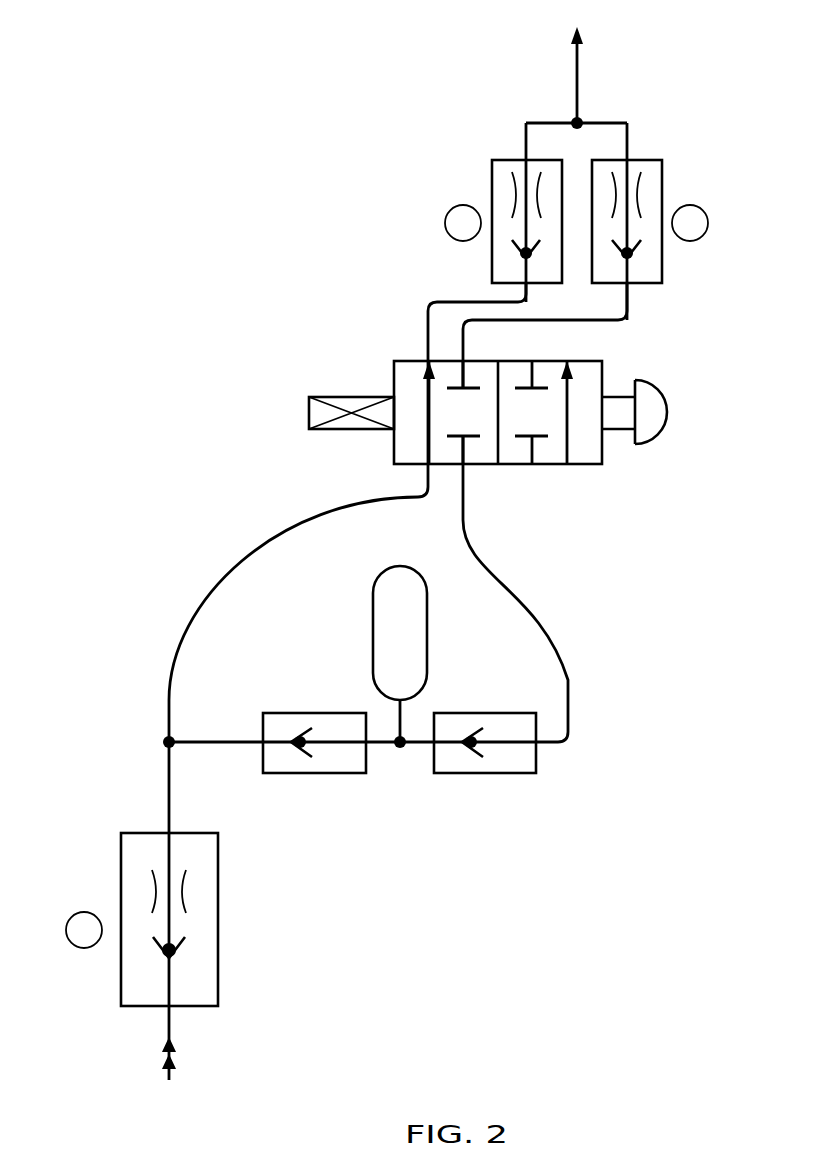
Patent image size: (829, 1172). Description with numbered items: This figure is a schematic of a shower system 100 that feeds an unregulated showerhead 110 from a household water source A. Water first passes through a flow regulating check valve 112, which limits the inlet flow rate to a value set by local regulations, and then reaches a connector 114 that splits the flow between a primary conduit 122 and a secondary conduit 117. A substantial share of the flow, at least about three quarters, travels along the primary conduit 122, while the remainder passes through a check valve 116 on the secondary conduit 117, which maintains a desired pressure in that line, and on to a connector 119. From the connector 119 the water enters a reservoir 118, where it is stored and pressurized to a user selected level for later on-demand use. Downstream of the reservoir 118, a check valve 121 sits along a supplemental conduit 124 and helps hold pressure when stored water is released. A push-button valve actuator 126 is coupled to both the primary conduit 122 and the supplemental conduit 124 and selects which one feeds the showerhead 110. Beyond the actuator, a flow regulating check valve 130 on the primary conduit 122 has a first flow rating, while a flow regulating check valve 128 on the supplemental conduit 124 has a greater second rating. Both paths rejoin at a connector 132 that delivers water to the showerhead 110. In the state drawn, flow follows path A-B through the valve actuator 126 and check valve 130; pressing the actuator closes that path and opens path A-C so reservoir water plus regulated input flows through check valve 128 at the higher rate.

The shower system 100 is at (296, 99).
The showerhead 110 is at (578, 34).
The flow regulating check valve 112 is at (218, 916).
The connector 114 is at (166, 746).
The check valve 116 is at (313, 774).
The secondary conduit 117 is at (218, 740).
The reservoir 118 is at (373, 630).
The connector 119 is at (395, 748).
The check valve 121 is at (484, 774).
The primary conduit 122 is at (480, 302).
The supplemental conduit 124 is at (545, 320).
The valve actuator 126 is at (603, 448).
The flow regulating check valve 128 is at (661, 186).
The flow regulating check valve 130 is at (492, 186).
The connector 132 is at (580, 120).